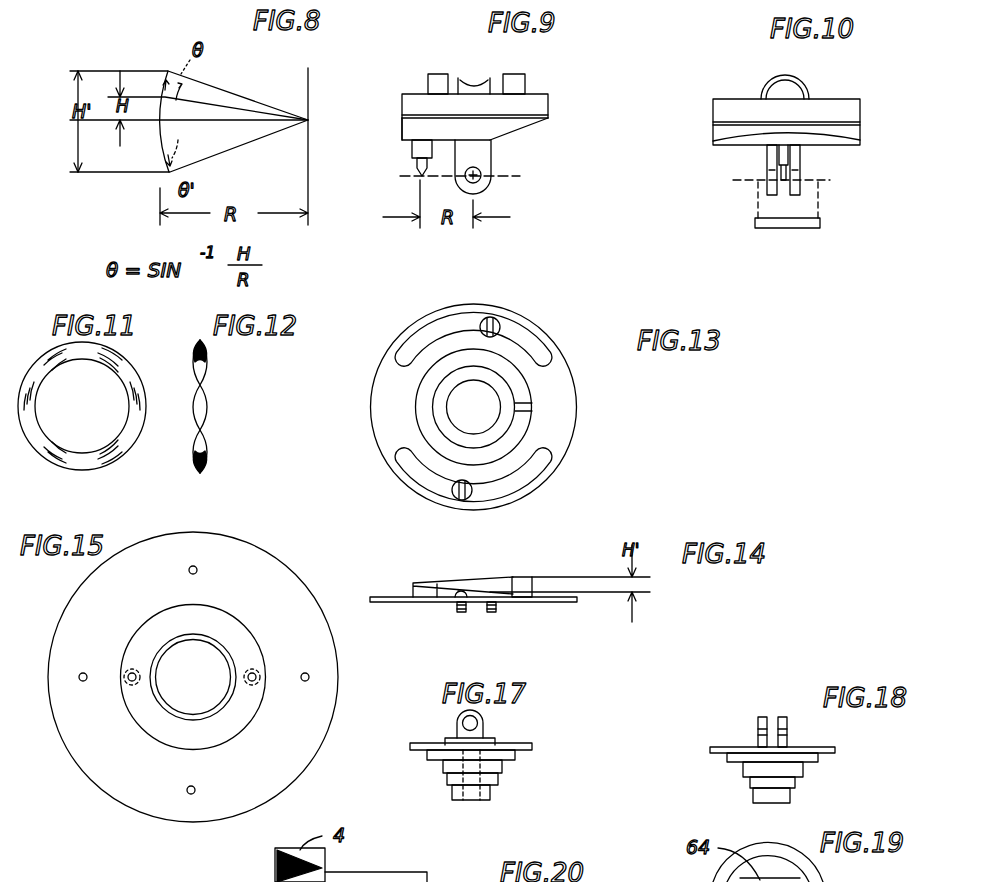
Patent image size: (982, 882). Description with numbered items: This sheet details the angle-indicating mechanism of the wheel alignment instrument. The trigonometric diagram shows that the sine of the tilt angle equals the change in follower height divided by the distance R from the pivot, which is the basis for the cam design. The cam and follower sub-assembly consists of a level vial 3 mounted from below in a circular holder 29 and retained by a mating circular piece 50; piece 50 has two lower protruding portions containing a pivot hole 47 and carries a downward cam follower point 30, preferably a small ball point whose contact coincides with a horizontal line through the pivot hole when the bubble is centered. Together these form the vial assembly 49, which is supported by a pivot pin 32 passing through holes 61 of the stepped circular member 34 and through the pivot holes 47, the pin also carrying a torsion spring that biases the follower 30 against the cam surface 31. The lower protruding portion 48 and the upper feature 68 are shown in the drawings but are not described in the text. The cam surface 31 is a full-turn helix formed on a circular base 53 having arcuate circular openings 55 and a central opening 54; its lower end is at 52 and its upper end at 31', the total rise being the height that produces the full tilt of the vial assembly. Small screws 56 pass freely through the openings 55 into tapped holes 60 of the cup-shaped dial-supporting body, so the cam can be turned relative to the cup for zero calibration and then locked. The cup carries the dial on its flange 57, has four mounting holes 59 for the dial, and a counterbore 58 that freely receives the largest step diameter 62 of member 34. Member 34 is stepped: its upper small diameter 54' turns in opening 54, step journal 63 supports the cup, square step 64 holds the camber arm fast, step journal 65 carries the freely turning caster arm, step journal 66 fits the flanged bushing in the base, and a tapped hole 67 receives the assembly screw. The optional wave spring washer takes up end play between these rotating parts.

In FIG. 9, the level vial 3 is at (477, 80).
In FIG. 10, the level vial 3 is at (793, 94).
In FIG. 9, the circular holder 29 is at (553, 112).
In FIG. 9, the cam follower point 30 is at (410, 172).
In FIG. 10, the cam follower point 30 is at (795, 176).
In FIG. 13, the cam surface 31 is at (431, 407).
In FIG. 14, the cam surface 31 is at (462, 572).
In FIG. 13, the upper end of cam surface 31' is at (524, 407).
In FIG. 14, the upper end of cam surface 31' is at (581, 569).
In FIG. 10, the pivot pin 32 is at (805, 232).
In FIG. 18, the stepped circular member 34 is at (853, 765).
In FIG. 9, the pivot hole 47 is at (482, 168).
In FIG. 9, the arm 48 is at (515, 180).
In FIG. 9, the vial assembly 49 is at (572, 108).
In FIG. 10, the vial assembly 49 is at (880, 111).
In FIG. 9, the circular piece 50 is at (400, 128).
In FIG. 10, the circular piece 50 is at (713, 136).
In FIG. 13, the lower end of cam surface 52 is at (520, 415).
In FIG. 14, the lower end of cam surface 52 is at (520, 600).
In FIG. 13, the circular base 53 is at (383, 425).
In FIG. 14, the circular base 53 is at (382, 595).
In FIG. 13, the central opening 54 is at (522, 385).
In FIG. 17, the upper small diameter 54' is at (506, 728).
In FIG. 13, the circular openings 55 is at (428, 330).
In FIG. 13, the small screws 56 is at (487, 318).
In FIG. 14, the small screws 56 is at (491, 614).
In FIG. 15, the flange 57 is at (112, 783).
In FIG. 15, the counterbore 58 is at (170, 718).
In FIG. 15, the mounting holes 59 is at (190, 797).
In FIG. 15, the tapped holes 60 is at (130, 690).
In FIG. 17, the holes 61 is at (455, 728).
In FIG. 18, the holes 61 is at (757, 727).
In FIG. 17, the largest step diameter 62 is at (540, 747).
In FIG. 17, the step journal 63 is at (518, 755).
In FIG. 17, the square step 64 is at (505, 766).
In FIG. 17, the step journal 65 is at (445, 779).
In FIG. 17, the step journal 66 is at (492, 792).
In FIG. 17, the tapped hole 67 is at (472, 800).
In FIG. 18, the post 68 is at (757, 715).